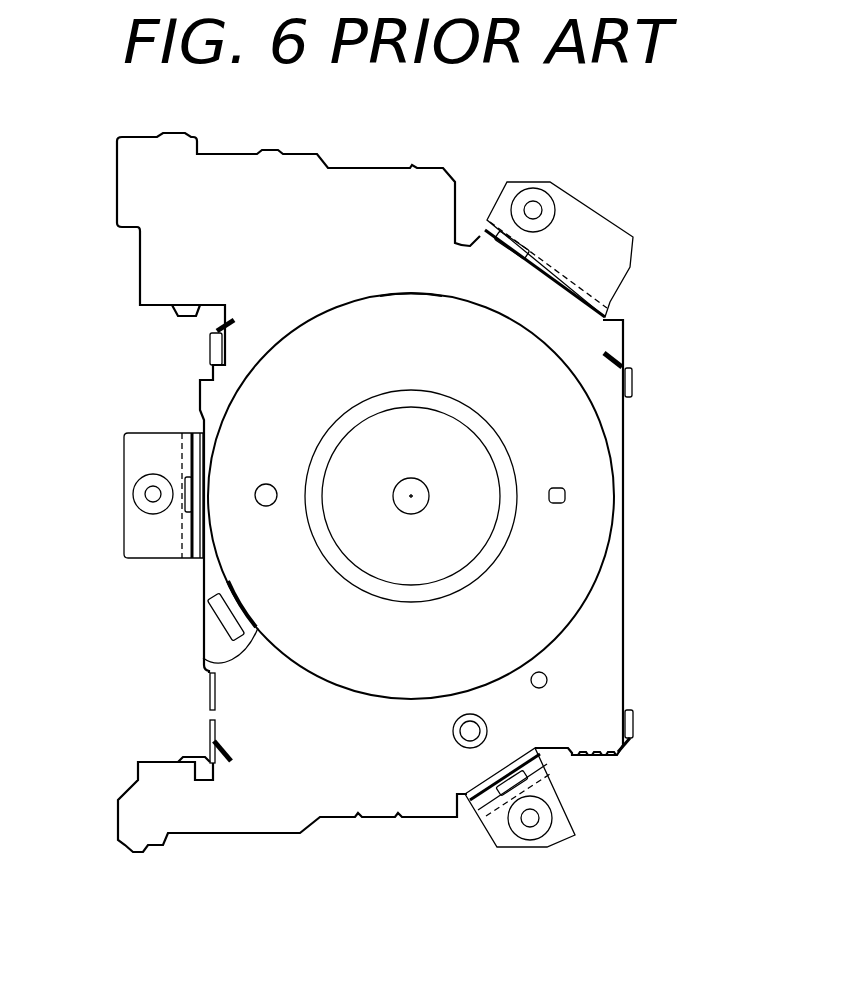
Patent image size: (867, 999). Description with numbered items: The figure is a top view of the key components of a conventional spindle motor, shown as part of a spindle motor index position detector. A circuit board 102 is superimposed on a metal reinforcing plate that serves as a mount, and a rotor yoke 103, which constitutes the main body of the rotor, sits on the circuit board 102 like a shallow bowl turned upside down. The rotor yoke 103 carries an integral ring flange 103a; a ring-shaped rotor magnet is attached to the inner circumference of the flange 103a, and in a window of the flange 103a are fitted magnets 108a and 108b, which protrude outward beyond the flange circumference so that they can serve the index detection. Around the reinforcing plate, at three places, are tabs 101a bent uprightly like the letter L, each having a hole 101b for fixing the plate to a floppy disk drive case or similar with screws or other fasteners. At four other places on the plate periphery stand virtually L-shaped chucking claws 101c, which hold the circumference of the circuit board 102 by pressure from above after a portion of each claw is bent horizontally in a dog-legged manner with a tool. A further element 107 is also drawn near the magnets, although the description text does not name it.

The circuit board 102 is at (265, 192).
The rotor yoke 103 is at (277, 442).
The ring flange 103a is at (402, 293).
The tab 101a is at (597, 228).
The hole 101b is at (532, 208).
The chucking claw 101c is at (623, 365).
The slot 107 is at (220, 613).
The magnet 108a is at (203, 658).
The magnet 108b is at (228, 583).